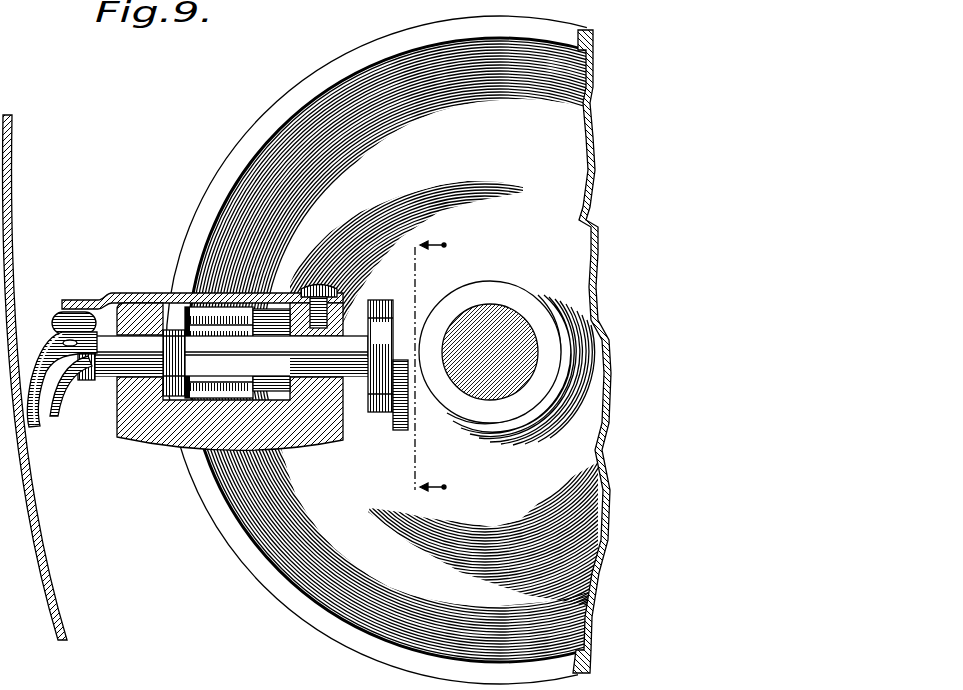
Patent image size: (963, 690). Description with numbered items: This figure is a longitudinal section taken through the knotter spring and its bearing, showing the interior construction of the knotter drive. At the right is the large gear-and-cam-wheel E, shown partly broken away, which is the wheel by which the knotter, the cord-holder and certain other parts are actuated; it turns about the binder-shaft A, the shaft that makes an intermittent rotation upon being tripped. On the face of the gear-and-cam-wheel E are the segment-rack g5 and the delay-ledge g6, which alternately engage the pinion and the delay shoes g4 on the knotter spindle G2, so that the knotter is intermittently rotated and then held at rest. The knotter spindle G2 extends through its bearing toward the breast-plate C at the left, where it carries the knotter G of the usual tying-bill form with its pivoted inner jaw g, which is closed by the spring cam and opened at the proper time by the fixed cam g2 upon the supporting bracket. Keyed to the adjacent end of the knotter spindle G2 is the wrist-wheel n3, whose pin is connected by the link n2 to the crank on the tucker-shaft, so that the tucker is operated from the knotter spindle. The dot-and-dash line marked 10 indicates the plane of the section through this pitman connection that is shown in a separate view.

The breast-plate C is at (32, 516).
The knotter G is at (49, 346).
The pivoted inner jaw g is at (52, 412).
The knotter spindle G2 is at (231, 356).
The fixed cam g2 is at (100, 299).
The delay shoes g4 is at (174, 363).
The segment-rack g5 is at (230, 368).
The delay-ledge g6 is at (500, 350).
The wrist-wheel n3 is at (380, 356).
The link n2 is at (394, 396).
The binder-shaft A is at (507, 363).
The gear-and-cam-wheel E is at (500, 350).
The section line 10— 10 is at (423, 370).